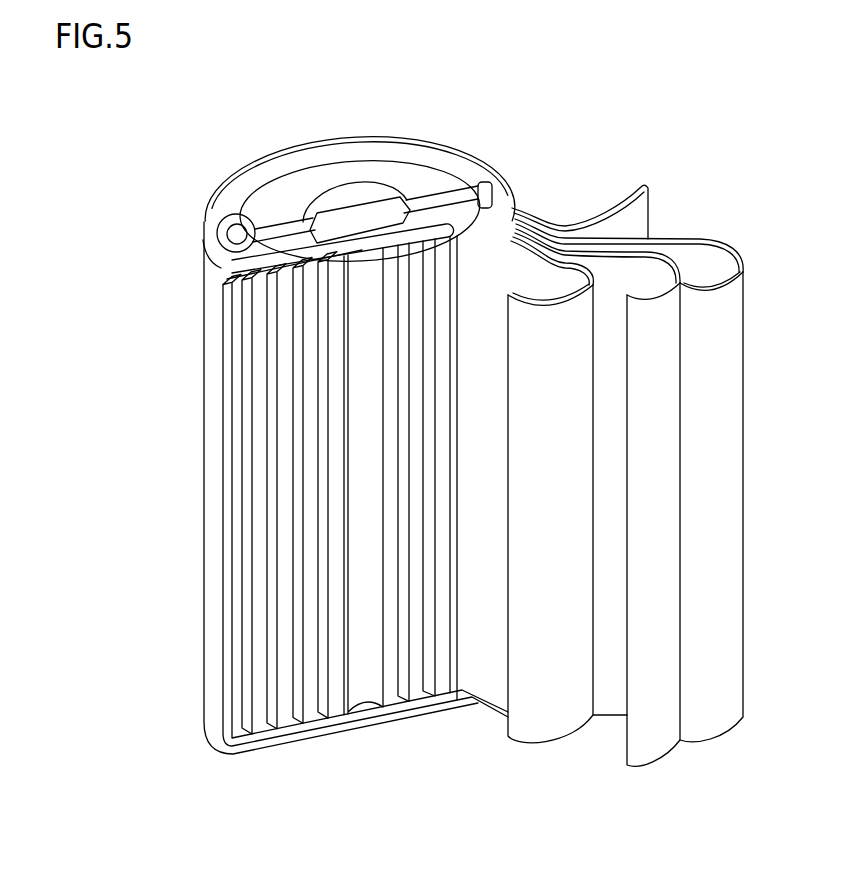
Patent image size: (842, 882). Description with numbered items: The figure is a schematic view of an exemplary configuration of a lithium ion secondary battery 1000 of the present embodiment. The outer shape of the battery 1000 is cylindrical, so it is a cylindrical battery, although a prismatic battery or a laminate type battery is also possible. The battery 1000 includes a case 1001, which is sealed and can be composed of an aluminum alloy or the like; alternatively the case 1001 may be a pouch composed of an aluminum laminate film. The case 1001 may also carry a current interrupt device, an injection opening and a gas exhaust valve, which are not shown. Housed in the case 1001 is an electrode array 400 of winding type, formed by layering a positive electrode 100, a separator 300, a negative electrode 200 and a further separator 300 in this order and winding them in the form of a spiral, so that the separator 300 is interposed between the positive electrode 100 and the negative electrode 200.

The battery 1000 is at (764, 69).
The case 1001 is at (206, 430).
The positive electrode 100 is at (549, 738).
The negative electrode 200 is at (723, 729).
The separator 300 is at (639, 753).
The electrode array 400 is at (752, 813).